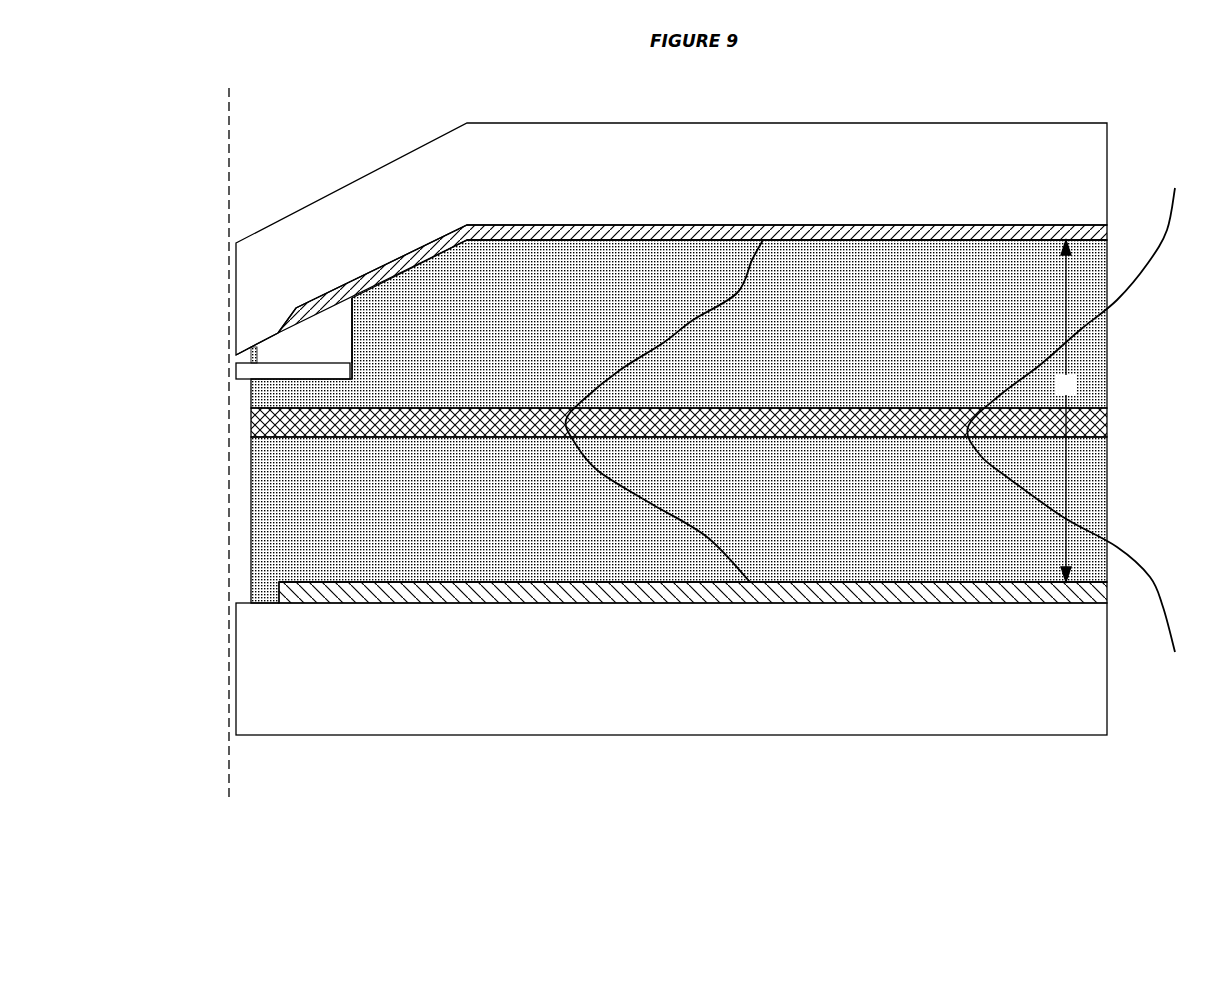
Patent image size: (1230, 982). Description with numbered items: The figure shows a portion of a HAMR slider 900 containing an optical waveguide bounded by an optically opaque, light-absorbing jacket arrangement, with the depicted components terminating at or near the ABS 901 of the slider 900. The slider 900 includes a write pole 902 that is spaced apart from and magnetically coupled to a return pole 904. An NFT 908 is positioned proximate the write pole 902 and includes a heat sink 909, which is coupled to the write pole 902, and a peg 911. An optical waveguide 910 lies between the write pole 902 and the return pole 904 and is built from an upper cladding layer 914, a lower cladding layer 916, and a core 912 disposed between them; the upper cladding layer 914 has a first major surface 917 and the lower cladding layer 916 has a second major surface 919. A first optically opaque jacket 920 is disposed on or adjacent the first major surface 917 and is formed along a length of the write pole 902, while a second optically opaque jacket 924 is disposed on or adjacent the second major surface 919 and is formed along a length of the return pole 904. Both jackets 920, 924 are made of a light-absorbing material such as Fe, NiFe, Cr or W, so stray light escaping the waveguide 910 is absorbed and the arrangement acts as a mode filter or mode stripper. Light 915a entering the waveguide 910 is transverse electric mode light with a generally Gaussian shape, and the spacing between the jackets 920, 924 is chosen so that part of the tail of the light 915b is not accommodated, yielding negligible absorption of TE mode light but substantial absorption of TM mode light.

The HAMR slider 900 is at (865, 84).
The ABS 901 is at (229, 159).
The write pole 902 is at (634, 182).
The return pole 904 is at (638, 674).
The NFT 908 is at (352, 333).
The heat sink 909 is at (289, 352).
The optical waveguide 910 is at (1112, 240).
The peg 911 is at (233, 370).
The core 912 is at (510, 437).
The upper cladding layer 914 is at (869, 344).
The light entering the waveguide 915a is at (1166, 222).
The light tail portion 915b is at (695, 320).
The lower cladding layer 916 is at (869, 536).
The first major surface 917 is at (582, 240).
The second major surface 919 is at (604, 582).
The first optically opaque jacket 920 is at (840, 225).
The second optically opaque jacket 924 is at (852, 590).